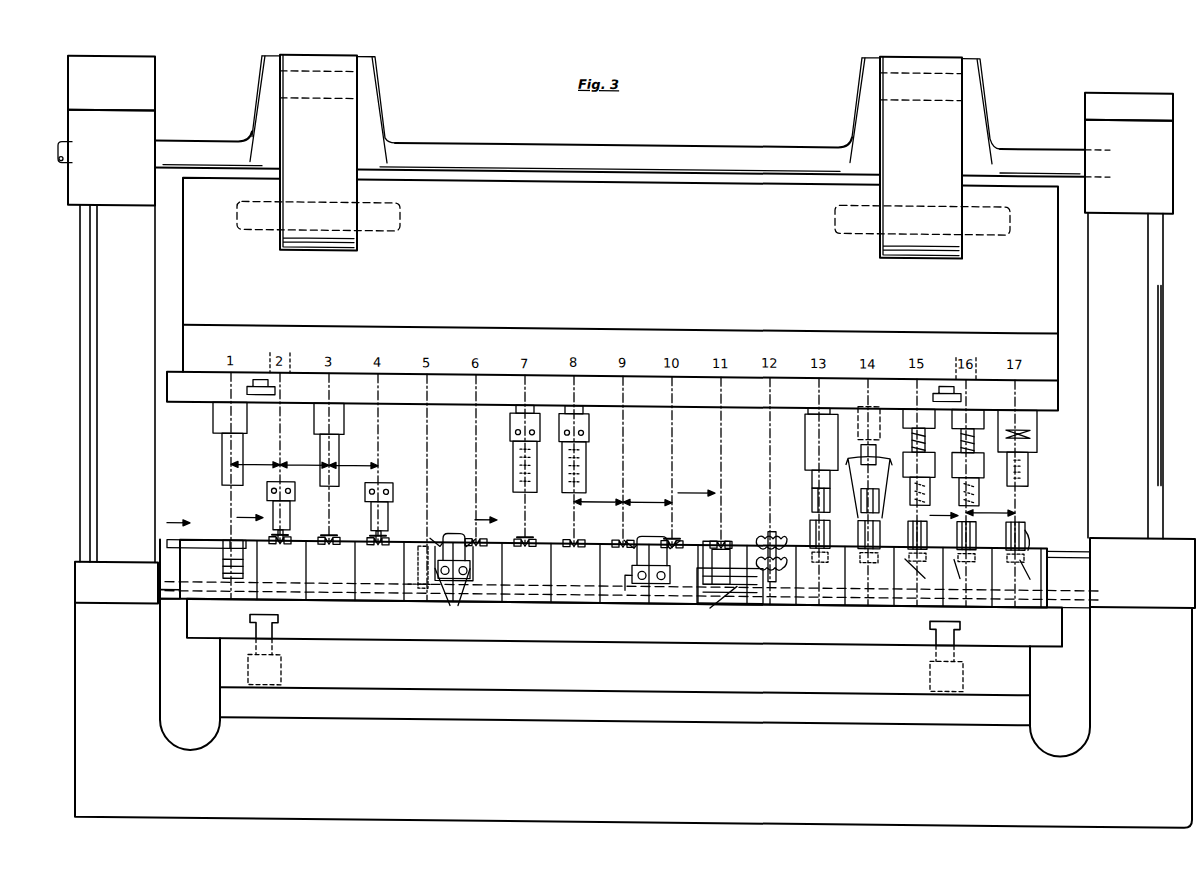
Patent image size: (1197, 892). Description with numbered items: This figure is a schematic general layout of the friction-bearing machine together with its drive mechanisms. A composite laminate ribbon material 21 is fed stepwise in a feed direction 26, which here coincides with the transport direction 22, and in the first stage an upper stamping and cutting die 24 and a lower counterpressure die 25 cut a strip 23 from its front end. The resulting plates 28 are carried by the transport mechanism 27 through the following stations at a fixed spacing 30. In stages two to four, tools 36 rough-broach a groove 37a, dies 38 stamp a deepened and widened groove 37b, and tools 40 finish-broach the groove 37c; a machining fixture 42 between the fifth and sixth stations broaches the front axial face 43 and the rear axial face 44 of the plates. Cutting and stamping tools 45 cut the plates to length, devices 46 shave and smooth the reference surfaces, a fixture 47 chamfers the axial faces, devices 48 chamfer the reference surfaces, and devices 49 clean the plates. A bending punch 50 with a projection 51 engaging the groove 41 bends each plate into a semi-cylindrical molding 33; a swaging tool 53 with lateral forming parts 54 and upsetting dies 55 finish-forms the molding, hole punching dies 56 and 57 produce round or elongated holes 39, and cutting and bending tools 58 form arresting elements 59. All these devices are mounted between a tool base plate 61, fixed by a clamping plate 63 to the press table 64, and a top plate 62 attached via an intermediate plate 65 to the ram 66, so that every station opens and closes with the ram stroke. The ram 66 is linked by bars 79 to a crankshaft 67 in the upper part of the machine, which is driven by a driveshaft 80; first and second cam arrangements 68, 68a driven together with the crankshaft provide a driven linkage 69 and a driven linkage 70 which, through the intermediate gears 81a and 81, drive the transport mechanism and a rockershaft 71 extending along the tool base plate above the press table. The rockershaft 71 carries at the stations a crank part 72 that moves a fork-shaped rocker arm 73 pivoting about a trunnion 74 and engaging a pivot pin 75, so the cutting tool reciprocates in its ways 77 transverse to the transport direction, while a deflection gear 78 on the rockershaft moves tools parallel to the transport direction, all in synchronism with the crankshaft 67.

The ribbon material 21 is at (200, 544).
The transport direction 22 is at (599, 498).
The strip 23 is at (238, 544).
The upper stamping and cutting die 24 is at (222, 470).
The lower counterpressure die 25 is at (223, 575).
The feed direction 26 is at (178, 526).
The transport mechanism 27 is at (1070, 546).
The plates 28 is at (290, 552).
The spacing 30 is at (623, 481).
The semi-cylindrical friction bearing moldings 33 is at (943, 573).
The rough-broaching tools 36 is at (273, 510).
The groove 37a is at (286, 540).
The deepened and widened groove 37b is at (334, 540).
The finish-broached groove 37c is at (386, 540).
The dies 38 is at (339, 450).
The elongated holes 39 is at (927, 535).
The finish-broaching tools 40 is at (388, 512).
The groove 41 is at (810, 528).
The machining fixture 42 is at (454, 535).
The front axial face 43 is at (432, 540).
The rear axial face 44 is at (475, 540).
The cutting and stamping tools 45 is at (537, 468).
The shaving and smoothing devices 46 is at (588, 470).
The chamfering fixture 47 is at (652, 545).
The chamfering devices 48 is at (723, 565).
The cleaning devices 49 is at (778, 530).
The bending punch 50 is at (805, 462).
The projection 51 is at (812, 497).
The swaging tool 53 is at (875, 428).
The lateral forming parts 54 is at (856, 512).
The upsetting dies 55 is at (872, 485).
The hole punching dies 56 is at (930, 497).
The hole punching dies 57 is at (979, 497).
The cutting and bending tools 58 is at (1028, 474).
The arresting elements 59 is at (1025, 526).
The tool base plate 61 is at (620, 642).
The top plate 62 is at (398, 406).
The clamping plate 63 is at (647, 691).
The press table 64 is at (668, 722).
The intermediate plate 65 is at (645, 329).
The ram 66 is at (620, 279).
The crankshaft 67 is at (192, 146).
The first cam arrangement 68 is at (111, 131).
The second cam arrangement 68a is at (1129, 153).
The driven linkage 69 is at (1152, 340).
The driven linkage 70 is at (80, 350).
The rockershaft 71 is at (172, 604).
The crank part 72 is at (410, 603).
The fork-shaped rocker arm 73 is at (438, 603).
The trunnion 74 is at (420, 572).
The pivot pin 75 is at (423, 548).
The ways 77 is at (462, 582).
The deflection gear 78 is at (722, 612).
The bars 79 is at (625, 155).
The driveshaft 80 is at (62, 172).
The intermediate gear 81 is at (116, 583).
The intermediate gear 81a is at (1142, 573).